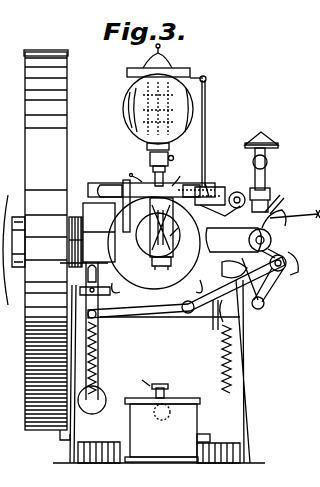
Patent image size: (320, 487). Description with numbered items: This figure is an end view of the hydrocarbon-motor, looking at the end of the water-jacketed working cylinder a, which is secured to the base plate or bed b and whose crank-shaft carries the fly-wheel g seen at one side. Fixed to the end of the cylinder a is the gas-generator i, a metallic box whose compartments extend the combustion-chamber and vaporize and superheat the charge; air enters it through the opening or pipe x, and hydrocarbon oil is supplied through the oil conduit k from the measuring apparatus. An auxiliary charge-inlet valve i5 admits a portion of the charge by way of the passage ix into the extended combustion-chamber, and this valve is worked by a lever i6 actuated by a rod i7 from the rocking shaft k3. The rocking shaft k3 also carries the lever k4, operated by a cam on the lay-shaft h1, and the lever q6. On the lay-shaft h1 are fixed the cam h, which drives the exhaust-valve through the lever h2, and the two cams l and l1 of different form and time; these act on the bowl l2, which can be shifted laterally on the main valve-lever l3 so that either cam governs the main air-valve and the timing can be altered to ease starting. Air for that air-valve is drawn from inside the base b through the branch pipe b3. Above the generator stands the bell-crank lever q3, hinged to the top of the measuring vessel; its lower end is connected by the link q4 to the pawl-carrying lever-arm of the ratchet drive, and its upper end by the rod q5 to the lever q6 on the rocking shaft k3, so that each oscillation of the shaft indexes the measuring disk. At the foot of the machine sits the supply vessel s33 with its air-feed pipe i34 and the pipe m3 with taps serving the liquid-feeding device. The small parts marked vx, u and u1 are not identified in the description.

The fly-wheel g is at (47, 245).
The gas-generator i is at (137, 237).
The air opening or pipe x is at (112, 184).
The connection vx is at (133, 172).
The working cylinder a is at (155, 245).
The auxiliary charge-inlet valve i5 is at (145, 228).
The passage ix is at (183, 236).
The lever i6 is at (176, 177).
The bell-crank lever q3 is at (200, 78).
The rod q5 is at (206, 136).
The link q4 is at (170, 145).
The rod i7 is at (201, 188).
The lever q6 is at (209, 186).
The rocking shaft k3 is at (243, 198).
The hydrocarbon-oil conduit k is at (220, 201).
The lever k4 is at (273, 200).
The cam h is at (279, 218).
The link u is at (300, 214).
The lay-shaft h1 is at (249, 240).
The cam l is at (274, 243).
The pivot u1 is at (286, 262).
The bowl l2 is at (293, 269).
The lever h2 is at (269, 288).
The cam l1 is at (240, 278).
The main valve-lever l3 is at (222, 312).
The base plate or bed b is at (186, 287).
The branch pipe b3 is at (100, 377).
The supply vessel s33 is at (162, 430).
The air-feed pipe i34 is at (145, 385).
The pipe m3 is at (210, 438).